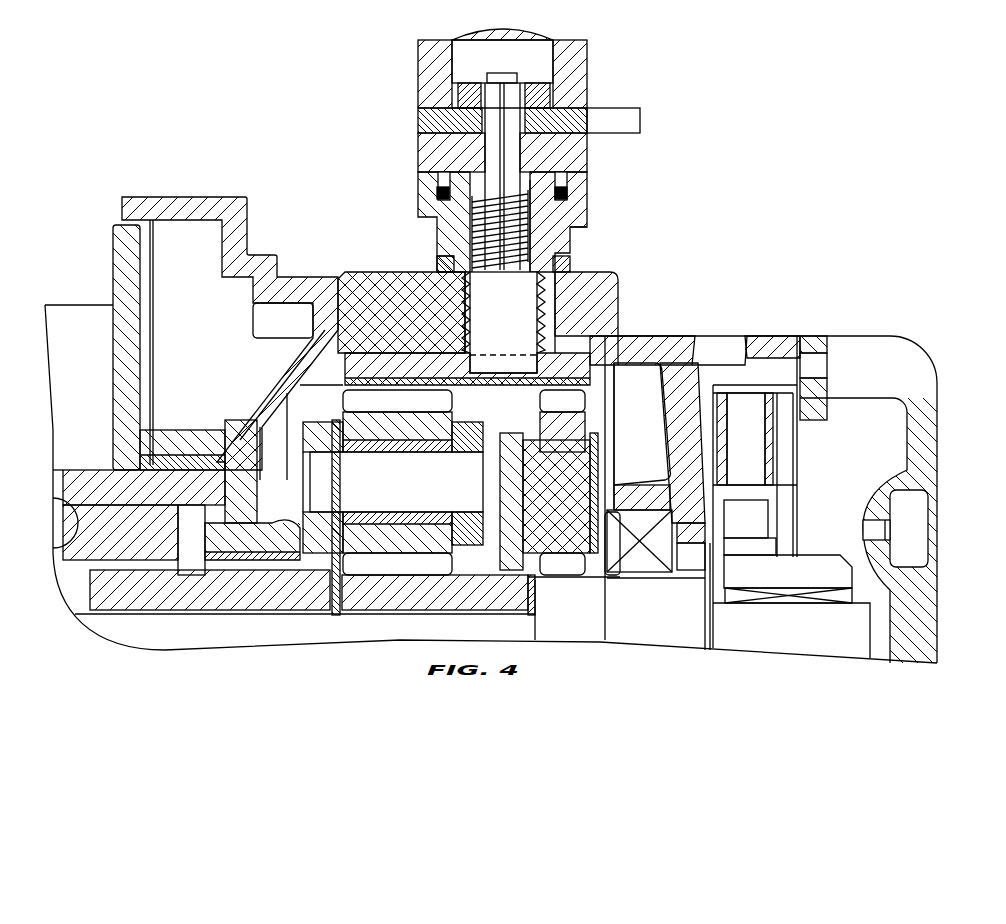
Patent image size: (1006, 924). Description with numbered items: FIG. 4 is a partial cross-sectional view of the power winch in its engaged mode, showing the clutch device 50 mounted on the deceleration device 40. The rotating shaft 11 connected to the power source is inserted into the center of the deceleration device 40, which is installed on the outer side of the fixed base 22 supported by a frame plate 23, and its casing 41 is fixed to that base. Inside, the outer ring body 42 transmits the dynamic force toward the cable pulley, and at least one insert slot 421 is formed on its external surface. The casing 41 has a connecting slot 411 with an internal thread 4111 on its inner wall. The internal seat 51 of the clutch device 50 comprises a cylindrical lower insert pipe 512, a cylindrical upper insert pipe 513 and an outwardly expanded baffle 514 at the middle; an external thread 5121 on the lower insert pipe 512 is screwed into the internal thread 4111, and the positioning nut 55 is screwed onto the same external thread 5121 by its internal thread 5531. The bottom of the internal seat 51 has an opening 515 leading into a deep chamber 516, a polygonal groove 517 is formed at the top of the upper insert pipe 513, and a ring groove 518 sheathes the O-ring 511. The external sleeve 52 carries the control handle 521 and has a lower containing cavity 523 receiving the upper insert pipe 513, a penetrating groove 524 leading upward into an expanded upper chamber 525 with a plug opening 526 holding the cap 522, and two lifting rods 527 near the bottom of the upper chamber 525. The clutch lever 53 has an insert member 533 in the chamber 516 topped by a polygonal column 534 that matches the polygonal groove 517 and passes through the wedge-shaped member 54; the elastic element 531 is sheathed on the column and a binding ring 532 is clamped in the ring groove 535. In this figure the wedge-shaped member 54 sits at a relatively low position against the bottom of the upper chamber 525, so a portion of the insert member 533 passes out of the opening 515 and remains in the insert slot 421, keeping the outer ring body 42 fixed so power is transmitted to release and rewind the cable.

The rotating shaft 11 is at (396, 627).
The fixed base 22 is at (187, 212).
The frame plate 23 is at (78, 335).
The deceleration device 40 is at (723, 310).
The casing 41 is at (597, 278).
The connecting slot 411 is at (573, 307).
The internal thread 4111 is at (583, 258).
The outer ring body 42 is at (362, 353).
The insert slot 421 is at (447, 370).
The clutch device 50 is at (526, 191).
The internal seat 51 is at (443, 178).
The O-ring 511 is at (560, 195).
The lower insert pipe 512 is at (553, 333).
The upper insert pipe 513 is at (600, 222).
The baffle 514 is at (585, 233).
The opening 515 is at (650, 336).
The chamber 516 is at (440, 220).
The polygonal groove 517 is at (477, 183).
The ring groove 518 is at (615, 187).
The external sleeve 52 is at (427, 162).
The control handle 521 is at (625, 118).
The cap 522 is at (495, 33).
The lower containing cavity 523 is at (556, 215).
The penetrating groove 524 is at (530, 148).
The upper chamber 525 is at (560, 97).
The plug opening 526 is at (589, 50).
The lifting rod 527 is at (437, 113).
The clutch lever 53 is at (450, 327).
The elastic element 531 is at (540, 185).
The binding ring 532 is at (497, 92).
The insert member 533 is at (520, 310).
The polygonal column 534 is at (496, 93).
The ring groove 535 is at (574, 51).
The wedge-shaped member 54 is at (468, 90).
The positioning nut 55 is at (568, 254).
The external thread 5121 is at (587, 263).
The internal thread 5531 is at (447, 240).